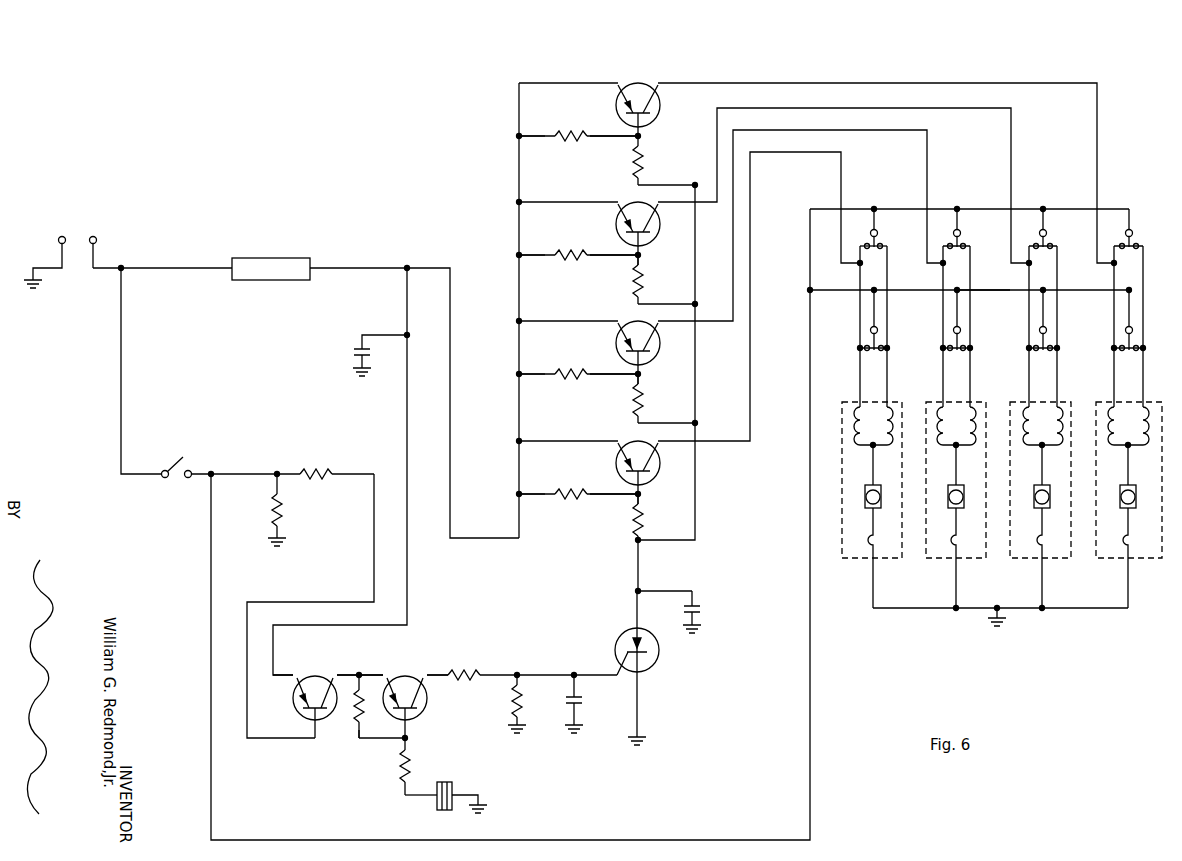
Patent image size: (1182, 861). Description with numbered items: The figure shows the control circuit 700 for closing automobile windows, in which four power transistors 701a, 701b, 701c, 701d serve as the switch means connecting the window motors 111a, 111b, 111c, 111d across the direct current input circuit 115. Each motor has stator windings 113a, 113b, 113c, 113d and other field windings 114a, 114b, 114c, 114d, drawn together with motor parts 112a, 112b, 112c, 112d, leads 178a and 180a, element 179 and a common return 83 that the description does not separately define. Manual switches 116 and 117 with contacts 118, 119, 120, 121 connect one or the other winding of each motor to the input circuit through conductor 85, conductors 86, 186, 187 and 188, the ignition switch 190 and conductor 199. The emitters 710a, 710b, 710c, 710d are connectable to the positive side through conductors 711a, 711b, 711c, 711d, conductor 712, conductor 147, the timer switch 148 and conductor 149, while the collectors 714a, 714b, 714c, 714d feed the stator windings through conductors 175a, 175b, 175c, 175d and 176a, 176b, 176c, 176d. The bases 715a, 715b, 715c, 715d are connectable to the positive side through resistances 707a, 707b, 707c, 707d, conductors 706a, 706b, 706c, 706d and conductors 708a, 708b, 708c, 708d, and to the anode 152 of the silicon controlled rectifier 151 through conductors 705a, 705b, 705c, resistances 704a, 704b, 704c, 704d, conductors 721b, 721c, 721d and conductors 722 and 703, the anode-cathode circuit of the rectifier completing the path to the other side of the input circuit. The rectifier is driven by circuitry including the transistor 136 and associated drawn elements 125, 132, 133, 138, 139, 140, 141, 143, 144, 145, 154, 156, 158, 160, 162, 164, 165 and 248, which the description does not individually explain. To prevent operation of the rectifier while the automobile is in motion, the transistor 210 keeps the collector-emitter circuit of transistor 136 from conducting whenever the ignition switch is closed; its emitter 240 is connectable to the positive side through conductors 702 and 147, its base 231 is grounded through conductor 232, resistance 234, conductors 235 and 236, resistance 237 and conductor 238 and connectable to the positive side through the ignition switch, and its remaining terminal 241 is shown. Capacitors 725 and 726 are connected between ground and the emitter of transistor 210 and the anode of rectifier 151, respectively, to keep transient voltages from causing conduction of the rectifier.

The ground connection 83 is at (1006, 624).
The conductor 85 is at (882, 324).
The conductor 86 is at (927, 308).
The window motor 111a is at (847, 572).
The window motor 111b is at (931, 572).
The window motor 111c is at (1015, 572).
The window motor 111d is at (1101, 572).
The motor 112a is at (867, 506).
The motor 112b is at (952, 506).
The motor 112c is at (1036, 506).
The motor 112d is at (1122, 506).
The stator winding 113a is at (852, 433).
The stator winding 113b is at (946, 439).
The stator winding 113c is at (1027, 439).
The stator winding 113d is at (1114, 439).
The field winding 114a is at (890, 406).
The field winding 114b is at (976, 439).
The field winding 114c is at (1059, 439).
The field winding 114d is at (1146, 439).
The input circuit 115 is at (72, 228).
The switch 116 is at (870, 332).
The switch 117 is at (882, 238).
The fixed contact 118 is at (862, 340).
The movable contact 119 is at (870, 242).
The fixed contact 120 is at (884, 348).
The fixed contact 121 is at (880, 246).
The crystal 125 is at (452, 788).
The ground 132 is at (484, 800).
The ground terminal 133 is at (54, 258).
The transistor 136 is at (428, 706).
The conductor 138 is at (412, 800).
The resistor 139 is at (408, 761).
The emitter 140 is at (410, 730).
The transistor 141 is at (400, 681).
The resistor 143 is at (362, 706).
The conductor 144 is at (357, 752).
The conductor 145 is at (360, 740).
The conductor 147 is at (447, 266).
The timer switch 148 is at (270, 257).
The conductor 149 is at (122, 266).
The rectifier 151 is at (660, 663).
The anode 152 is at (630, 637).
The emitter 154 is at (642, 716).
The base 156 is at (618, 670).
The junction 158 is at (530, 673).
The resistor 160 is at (512, 698).
The resistor 162 is at (474, 673).
The base 164 is at (424, 679).
The capacitor 165 is at (564, 696).
The conductor 175a is at (802, 154).
The conductor 175b is at (802, 215).
The conductor 175c is at (834, 108).
The conductor 175d is at (940, 85).
The conductor 176a is at (860, 284).
The conductor 176b is at (942, 262).
The conductor 176c is at (1028, 302).
The conductor 176d is at (1114, 302).
The lead 178a is at (868, 459).
The commutator 179 is at (873, 540).
The lead 180a is at (868, 548).
The conductor 186 is at (990, 295).
The conductor 187 is at (980, 207).
The conductor 188 is at (597, 838).
The ignition switch 190 is at (175, 465).
The conductor 199 is at (121, 380).
The transistor 210 is at (314, 679).
The base 231 is at (306, 718).
The conductor 232 is at (320, 600).
The resistance 234 is at (327, 472).
The conductor 235 is at (285, 472).
The conductor 236 is at (274, 489).
The resistance 237 is at (283, 510).
The conductor 238 is at (285, 542).
The emitter 240 is at (295, 690).
The collector 241 is at (336, 708).
The junction 248 is at (358, 676).
The control circuit 700 is at (450, 212).
The power transistor 701a is at (648, 490).
The power transistor 701b is at (648, 367).
The power transistor 701c is at (650, 246).
The power transistor 701d is at (650, 120).
The conductor 702 is at (407, 300).
The conductor 703 is at (634, 580).
The resistance 704a is at (643, 524).
The resistance 704b is at (645, 400).
The resistance 704c is at (644, 279).
The resistance 704d is at (646, 159).
The conductor 705a is at (638, 510).
The conductor 705b is at (638, 373).
The conductor 705c is at (636, 254).
The conductor 706a is at (630, 491).
The conductor 706b is at (612, 378).
The conductor 706c is at (612, 259).
The conductor 706d is at (612, 140).
The resistance 707a is at (578, 481).
The resistance 707b is at (578, 363).
The resistance 707c is at (578, 244).
The resistance 707d is at (578, 126).
The conductor 708a is at (533, 498).
The conductor 708b is at (533, 378).
The conductor 708c is at (533, 259).
The conductor 708d is at (533, 140).
The emitter 710a is at (630, 447).
The emitter 710b is at (628, 327).
The emitter 710c is at (630, 207).
The emitter 710d is at (640, 74).
The conductor 711a is at (571, 444).
The conductor 711b is at (575, 324).
The conductor 711c is at (575, 205).
The conductor 711d is at (575, 86).
The conductor 712 is at (519, 160).
The collector 714a is at (656, 456).
The collector 714b is at (656, 336).
The collector 714c is at (656, 220).
The collector 714d is at (660, 101).
The base 715a is at (647, 474).
The base 715b is at (620, 350).
The base 715c is at (624, 230).
The base 715d is at (620, 112).
The conductor 721b is at (652, 426).
The conductor 721c is at (652, 306).
The conductor 721d is at (660, 188).
The conductor 722 is at (698, 512).
The capacitor 725 is at (354, 354).
The capacitor 726 is at (700, 612).